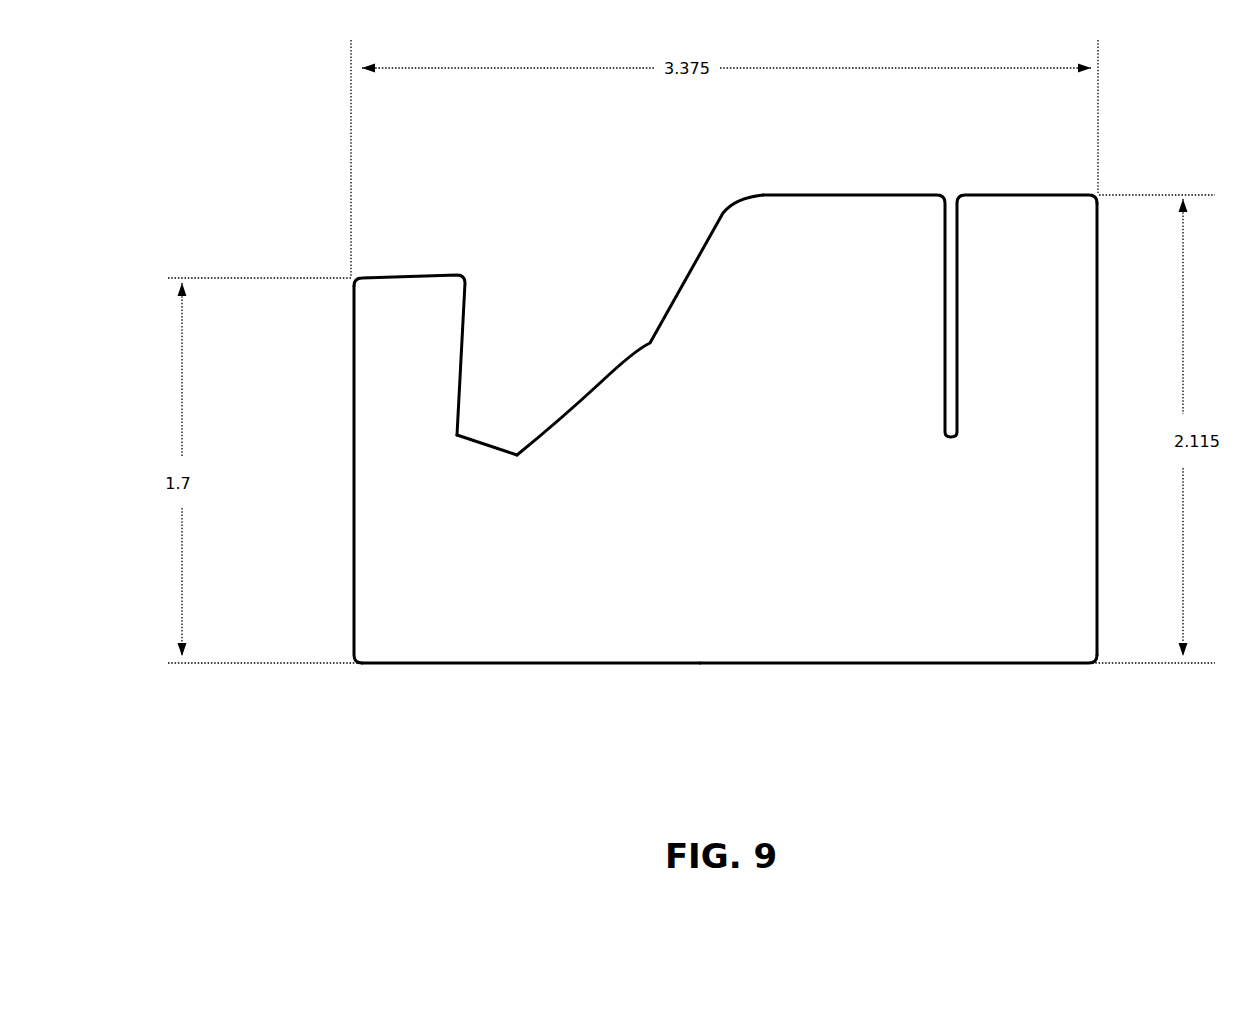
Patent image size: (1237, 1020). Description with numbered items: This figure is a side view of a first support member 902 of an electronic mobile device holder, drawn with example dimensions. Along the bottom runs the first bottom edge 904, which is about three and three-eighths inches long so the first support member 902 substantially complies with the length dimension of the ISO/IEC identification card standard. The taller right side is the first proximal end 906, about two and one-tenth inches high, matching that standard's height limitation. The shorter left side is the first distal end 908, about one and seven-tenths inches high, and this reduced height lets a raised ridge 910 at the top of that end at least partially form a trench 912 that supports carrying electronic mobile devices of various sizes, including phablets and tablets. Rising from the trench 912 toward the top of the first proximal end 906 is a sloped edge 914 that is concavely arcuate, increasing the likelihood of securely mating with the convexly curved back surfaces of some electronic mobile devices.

The first support member 902 is at (610, 648).
The first bottom edge 904 is at (749, 675).
The first proximal end 906 is at (1112, 314).
The first distal end 908 is at (344, 391).
The raised ridge 910 is at (394, 277).
The trench 912 is at (540, 258).
The sloped edge 914 is at (648, 300).